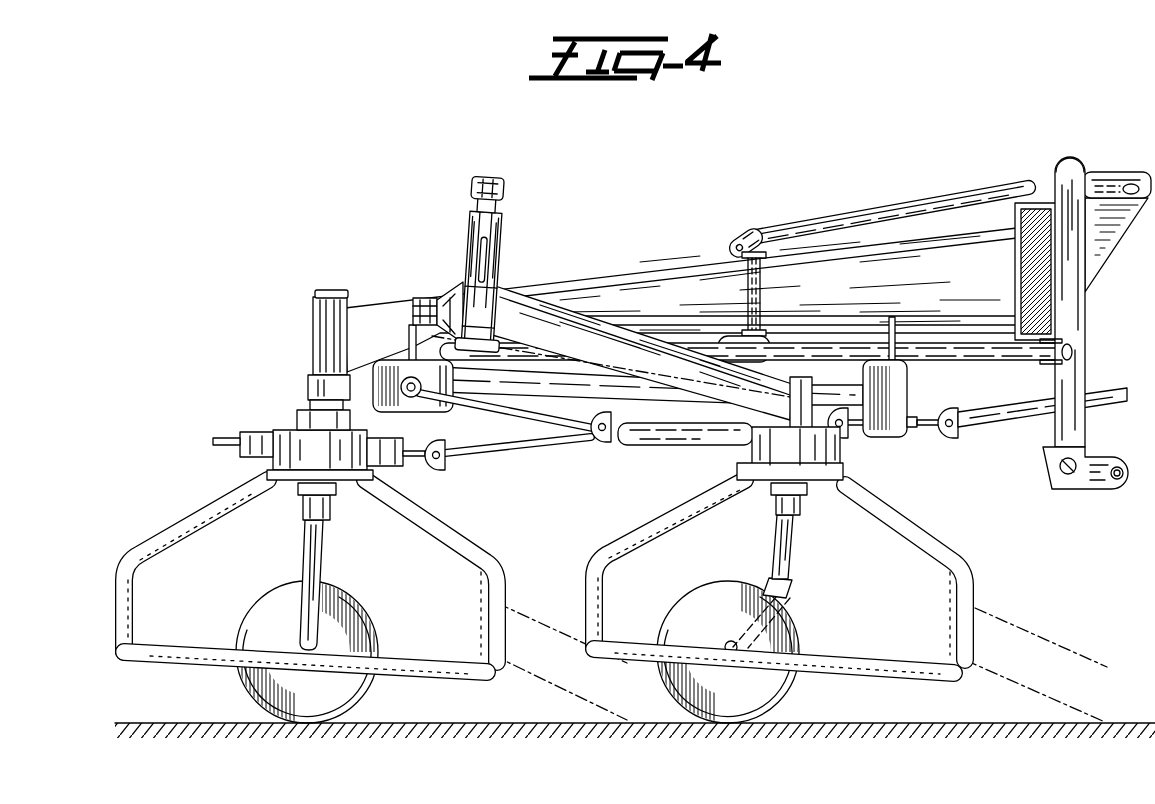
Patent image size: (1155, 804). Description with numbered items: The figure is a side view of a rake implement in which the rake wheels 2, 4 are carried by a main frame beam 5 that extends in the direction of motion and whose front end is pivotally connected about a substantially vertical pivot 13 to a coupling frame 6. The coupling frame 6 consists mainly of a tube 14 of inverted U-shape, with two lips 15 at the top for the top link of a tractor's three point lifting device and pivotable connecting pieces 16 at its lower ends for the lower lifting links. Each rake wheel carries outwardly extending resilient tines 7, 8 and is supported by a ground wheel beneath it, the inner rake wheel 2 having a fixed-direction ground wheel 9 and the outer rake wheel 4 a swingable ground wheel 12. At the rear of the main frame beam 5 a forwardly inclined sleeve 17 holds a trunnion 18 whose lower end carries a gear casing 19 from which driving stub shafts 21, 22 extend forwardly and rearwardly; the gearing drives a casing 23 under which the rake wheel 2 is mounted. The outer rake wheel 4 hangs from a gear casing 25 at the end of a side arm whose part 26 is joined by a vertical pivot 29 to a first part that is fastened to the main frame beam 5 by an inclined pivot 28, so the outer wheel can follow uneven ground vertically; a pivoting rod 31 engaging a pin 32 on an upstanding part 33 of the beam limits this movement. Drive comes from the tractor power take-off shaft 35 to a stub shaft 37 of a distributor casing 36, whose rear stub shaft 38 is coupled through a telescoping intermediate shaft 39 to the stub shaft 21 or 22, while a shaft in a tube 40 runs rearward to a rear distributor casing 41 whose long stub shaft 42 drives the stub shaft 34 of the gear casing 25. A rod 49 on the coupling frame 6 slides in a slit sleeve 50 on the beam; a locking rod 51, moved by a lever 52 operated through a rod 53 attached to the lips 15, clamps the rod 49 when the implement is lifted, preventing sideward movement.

The rake wheel 2 is at (470, 553).
The rake wheel 4 is at (940, 553).
The main frame beam 5 is at (611, 302).
The coupling frame 6 is at (1067, 156).
The resilient tine 7 is at (1076, 652).
The resilient tine 8 is at (1076, 710).
The ground wheel 9 is at (318, 592).
The swingable ground wheel 12 is at (787, 596).
The pivot 13 is at (1030, 242).
The tube 14 is at (1073, 322).
The lips 15 is at (1113, 172).
The connecting piece 16 is at (1098, 466).
The sleeve 17 is at (313, 339).
The trunnion 18 is at (326, 290).
The gear casing 19 is at (297, 414).
The driving stub shaft 21 is at (410, 460).
The driving stub shaft 22 is at (255, 446).
The gear casing 23 is at (303, 438).
The gear casing 25 is at (760, 450).
The side arm part 26 is at (553, 322).
The pivot 28 is at (424, 298).
The pivot 29 is at (460, 294).
The pivoting rod 31 is at (500, 234).
The pin 32 is at (501, 200).
The upstanding part 33 is at (494, 262).
The driving stub shaft 34 is at (603, 442).
The power take-off shaft 35 is at (1115, 390).
The distributor casing 36 is at (908, 384).
The stub shaft 37 is at (942, 434).
The stub shaft 38 is at (850, 432).
The intermediate shaft 39 is at (520, 447).
The tube 40 is at (502, 393).
The rear distributor casing 41 is at (378, 385).
The stub shaft 42 is at (418, 397).
The rod 49 is at (986, 361).
The slit sleeve 50 is at (735, 340).
The locking rod 51 is at (764, 290).
The lever 52 is at (746, 232).
The rod 53 is at (821, 222).